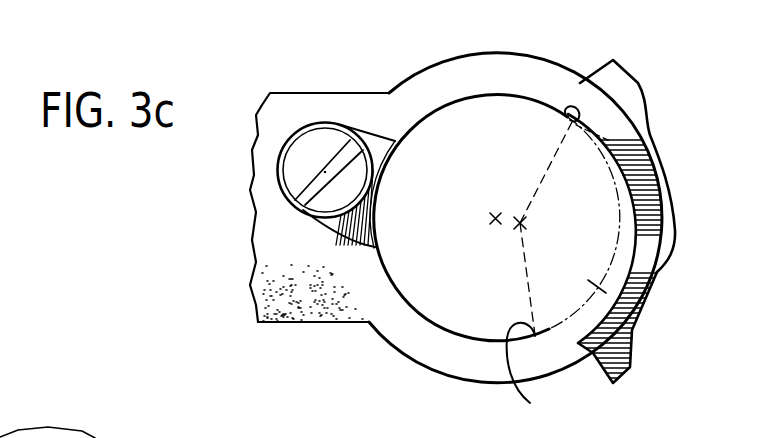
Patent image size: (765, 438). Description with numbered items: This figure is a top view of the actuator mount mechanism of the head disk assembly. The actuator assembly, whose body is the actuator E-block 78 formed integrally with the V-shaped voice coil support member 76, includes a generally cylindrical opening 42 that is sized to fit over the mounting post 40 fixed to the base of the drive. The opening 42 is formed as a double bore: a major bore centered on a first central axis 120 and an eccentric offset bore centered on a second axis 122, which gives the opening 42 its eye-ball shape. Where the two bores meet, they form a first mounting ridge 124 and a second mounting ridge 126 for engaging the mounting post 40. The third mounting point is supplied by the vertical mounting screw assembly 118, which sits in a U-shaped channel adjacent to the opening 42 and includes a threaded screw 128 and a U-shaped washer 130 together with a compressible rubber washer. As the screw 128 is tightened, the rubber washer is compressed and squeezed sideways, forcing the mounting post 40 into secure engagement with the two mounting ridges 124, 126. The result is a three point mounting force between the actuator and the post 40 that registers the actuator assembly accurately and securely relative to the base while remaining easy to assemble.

The cylindrical opening 42 is at (481, 142).
The mounting post 40 is at (600, 290).
The voice coil support member 76 is at (623, 366).
The actuator E-block 78 is at (305, 320).
The vertical mounting screw assembly 118 is at (328, 160).
The first central axis 120 is at (489, 219).
The second axis 122 is at (527, 223).
The first mounting ridge 124 is at (580, 108).
The second mounting ridge 126 is at (530, 403).
The threaded screw 128 is at (292, 180).
The U-shaped washer 130 is at (318, 228).